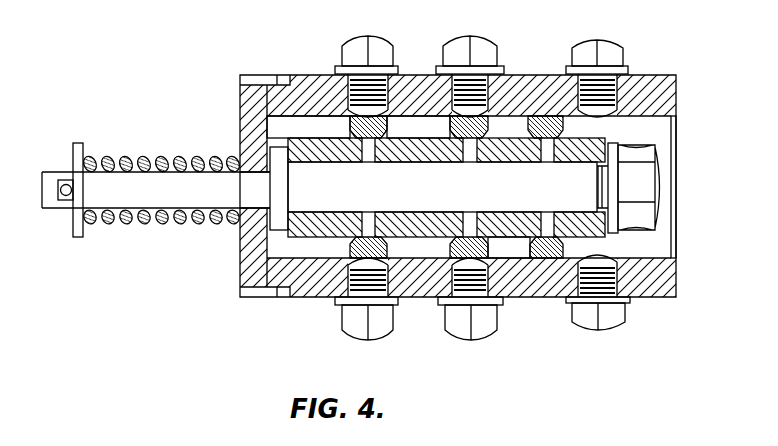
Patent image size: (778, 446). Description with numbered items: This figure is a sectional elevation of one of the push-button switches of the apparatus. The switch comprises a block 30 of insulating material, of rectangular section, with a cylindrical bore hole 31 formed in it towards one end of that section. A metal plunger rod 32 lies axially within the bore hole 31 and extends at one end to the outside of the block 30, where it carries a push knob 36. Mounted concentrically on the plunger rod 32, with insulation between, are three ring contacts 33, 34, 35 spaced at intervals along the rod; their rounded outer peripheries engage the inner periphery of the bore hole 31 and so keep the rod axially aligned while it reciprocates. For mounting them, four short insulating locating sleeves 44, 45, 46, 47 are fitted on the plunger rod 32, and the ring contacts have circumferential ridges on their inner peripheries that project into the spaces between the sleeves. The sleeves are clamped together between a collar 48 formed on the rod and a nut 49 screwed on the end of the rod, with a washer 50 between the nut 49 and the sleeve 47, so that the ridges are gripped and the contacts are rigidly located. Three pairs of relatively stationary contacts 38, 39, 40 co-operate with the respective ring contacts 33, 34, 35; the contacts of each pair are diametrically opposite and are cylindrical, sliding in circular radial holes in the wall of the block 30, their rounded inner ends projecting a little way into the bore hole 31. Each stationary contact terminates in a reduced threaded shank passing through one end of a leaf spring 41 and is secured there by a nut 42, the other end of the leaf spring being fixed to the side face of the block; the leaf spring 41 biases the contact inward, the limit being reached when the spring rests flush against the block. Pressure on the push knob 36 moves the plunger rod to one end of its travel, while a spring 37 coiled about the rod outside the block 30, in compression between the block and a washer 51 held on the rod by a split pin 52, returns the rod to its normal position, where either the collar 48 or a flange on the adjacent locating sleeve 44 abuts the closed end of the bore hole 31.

The block 30 is at (543, 86).
The bore hole 31 is at (656, 118).
The plunger rod 32 is at (448, 187).
The ring contact 33 is at (353, 122).
The ring contact 34 is at (505, 98).
The ring contact 35 is at (568, 125).
The push knob 36 is at (55, 172).
The spring 37 is at (148, 158).
The stationary contacts 38 is at (359, 82).
The stationary contacts 39 is at (461, 82).
The stationary contacts 40 is at (603, 85).
The leaf spring 41 is at (340, 64).
The nut 42 is at (386, 50).
The locating sleeve 44 is at (297, 137).
The locating sleeve 45 is at (412, 135).
The locating sleeve 46 is at (510, 250).
The locating sleeve 47 is at (569, 250).
The collar 48 is at (283, 189).
The nut 49 is at (633, 214).
The washer 50 is at (617, 243).
The washer 51 is at (80, 147).
The split pin 52 is at (66, 196).